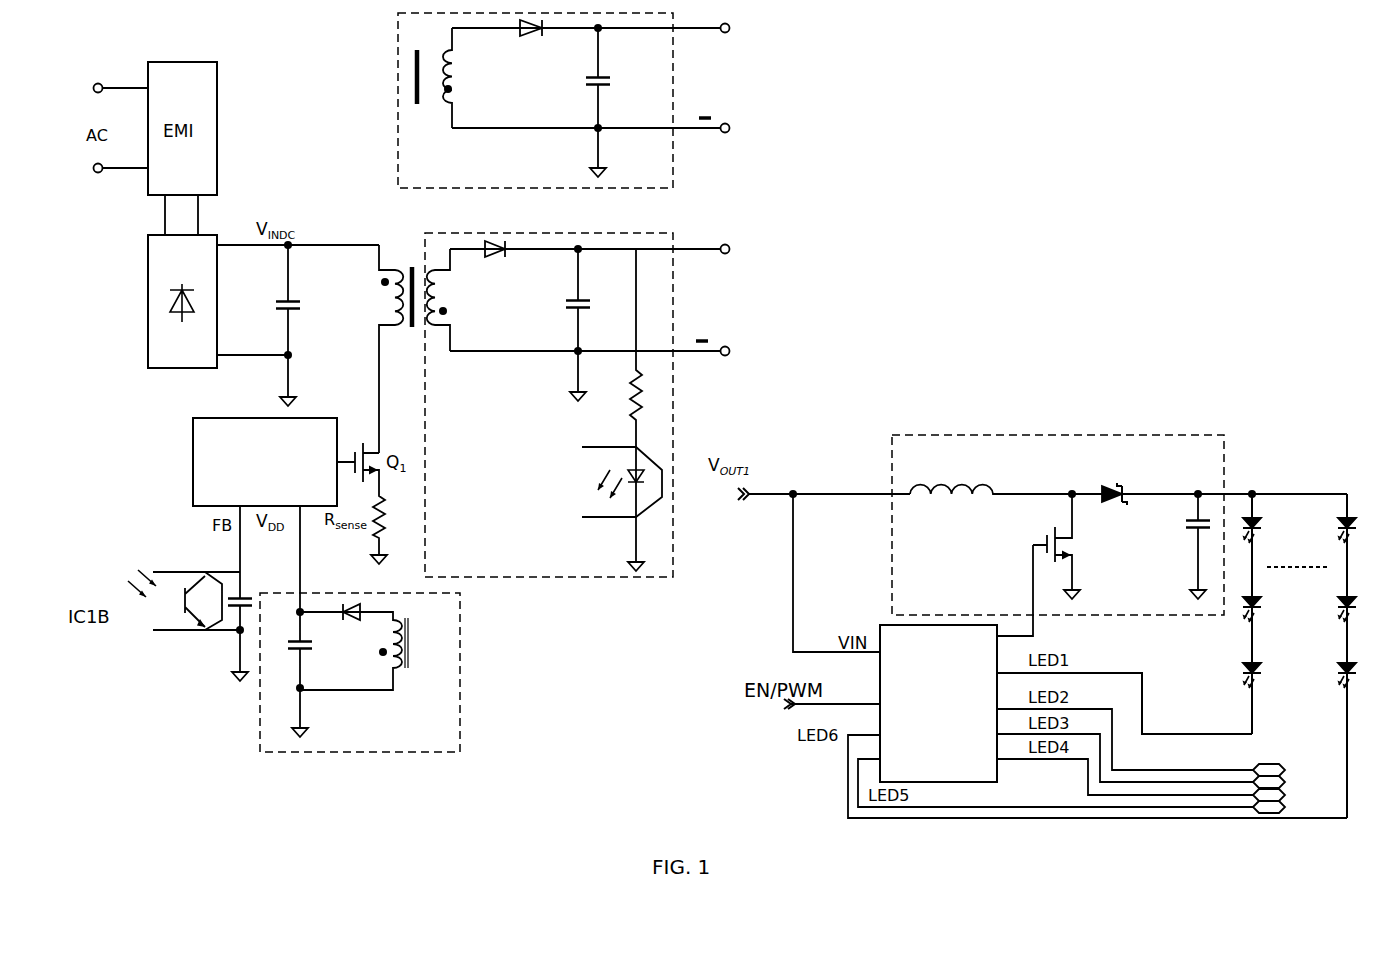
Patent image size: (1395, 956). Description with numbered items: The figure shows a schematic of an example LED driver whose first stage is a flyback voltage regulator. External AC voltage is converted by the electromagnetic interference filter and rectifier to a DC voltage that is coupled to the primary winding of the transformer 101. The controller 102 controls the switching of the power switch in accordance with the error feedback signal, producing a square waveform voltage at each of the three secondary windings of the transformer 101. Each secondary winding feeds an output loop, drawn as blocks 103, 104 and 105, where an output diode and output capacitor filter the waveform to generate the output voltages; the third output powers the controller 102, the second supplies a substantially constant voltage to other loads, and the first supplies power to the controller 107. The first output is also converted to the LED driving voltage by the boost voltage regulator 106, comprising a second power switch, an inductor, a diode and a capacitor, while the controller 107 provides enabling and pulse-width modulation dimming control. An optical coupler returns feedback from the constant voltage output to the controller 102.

The transformer 101 is at (400, 271).
The controller 102 is at (284, 486).
The first secondary output circuit 103 is at (463, 180).
The second secondary output circuit 104 is at (490, 549).
The auxiliary output circuit 105 is at (445, 749).
The boost voltage regulator 106 is at (963, 602).
The controller 107 is at (957, 726).